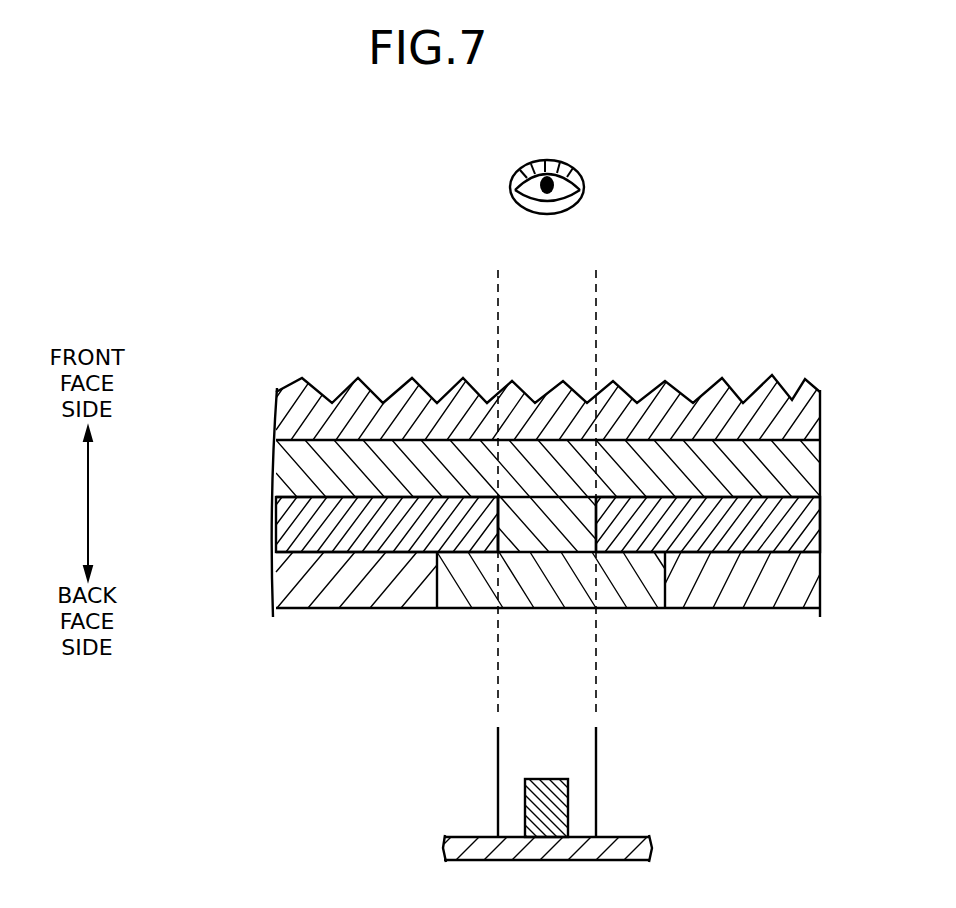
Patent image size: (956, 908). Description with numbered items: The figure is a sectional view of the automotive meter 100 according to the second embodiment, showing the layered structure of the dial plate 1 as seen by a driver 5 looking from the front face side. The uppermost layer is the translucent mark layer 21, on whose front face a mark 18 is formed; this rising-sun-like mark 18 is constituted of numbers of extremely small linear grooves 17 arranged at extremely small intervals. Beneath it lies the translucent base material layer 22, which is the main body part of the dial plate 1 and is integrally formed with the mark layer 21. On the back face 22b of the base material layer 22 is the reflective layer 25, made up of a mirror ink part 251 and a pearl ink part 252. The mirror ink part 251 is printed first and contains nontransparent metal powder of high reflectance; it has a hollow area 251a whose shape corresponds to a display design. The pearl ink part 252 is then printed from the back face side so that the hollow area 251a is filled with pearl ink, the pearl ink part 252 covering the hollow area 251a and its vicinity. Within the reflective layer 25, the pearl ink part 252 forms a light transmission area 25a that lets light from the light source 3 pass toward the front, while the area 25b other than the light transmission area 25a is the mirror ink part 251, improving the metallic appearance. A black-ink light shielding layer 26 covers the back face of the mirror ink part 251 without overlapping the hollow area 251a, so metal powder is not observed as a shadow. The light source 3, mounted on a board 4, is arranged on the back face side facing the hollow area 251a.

The automotive meter 100 is at (342, 133).
The dial plate 1 is at (275, 361).
The driver 5 is at (547, 160).
The mark 18 is at (485, 263).
The linear grooves 17 is at (333, 385).
The mark layer 21 is at (280, 425).
The base material layer 22 is at (280, 470).
The back face 22b is at (687, 497).
The reflective layer 25 is at (458, 707).
The mirror ink part 251 is at (358, 548).
The hollow area 251a is at (502, 509).
The pearl ink part 252 is at (522, 549).
The light transmission area 25a is at (590, 537).
The area other than the light transmission area 25b is at (318, 524).
The light shielding layer 26 is at (280, 578).
The light source 3 is at (525, 800).
The substrate 4 is at (630, 830).